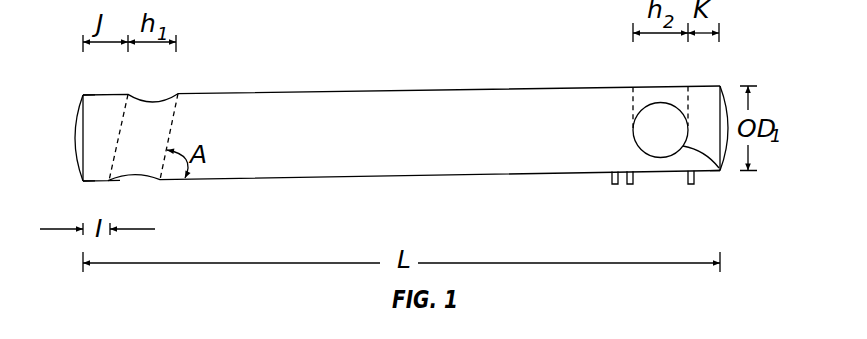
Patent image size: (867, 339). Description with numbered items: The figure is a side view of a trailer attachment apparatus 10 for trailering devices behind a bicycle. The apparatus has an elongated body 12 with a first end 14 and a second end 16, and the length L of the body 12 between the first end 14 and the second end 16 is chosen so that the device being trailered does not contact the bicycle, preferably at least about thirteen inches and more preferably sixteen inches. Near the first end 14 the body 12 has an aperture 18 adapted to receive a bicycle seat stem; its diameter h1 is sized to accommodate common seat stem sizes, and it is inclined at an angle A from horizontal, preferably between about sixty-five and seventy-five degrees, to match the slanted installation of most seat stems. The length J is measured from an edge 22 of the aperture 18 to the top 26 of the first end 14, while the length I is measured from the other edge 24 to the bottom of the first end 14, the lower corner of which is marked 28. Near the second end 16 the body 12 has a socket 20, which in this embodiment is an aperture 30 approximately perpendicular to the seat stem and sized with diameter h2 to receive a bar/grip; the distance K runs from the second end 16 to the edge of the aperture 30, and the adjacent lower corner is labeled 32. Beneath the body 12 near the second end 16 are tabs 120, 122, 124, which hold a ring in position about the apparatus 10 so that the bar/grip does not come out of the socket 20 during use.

The trailer attachment apparatus 10 is at (507, 41).
The elongated body 12 is at (405, 90).
The first end 14 is at (76, 140).
The second end 16 is at (723, 96).
The aperture 18 is at (178, 93).
The socket 20 is at (628, 138).
The edge 22 is at (128, 94).
The edge 24 is at (108, 183).
The top 26 is at (82, 92).
The bottom edge of first end 28 is at (83, 182).
The aperture 30 is at (643, 113).
The bottom edge of second end 32 is at (720, 168).
The tab 120 is at (692, 185).
The tab 122 is at (631, 185).
The tab 124 is at (613, 185).